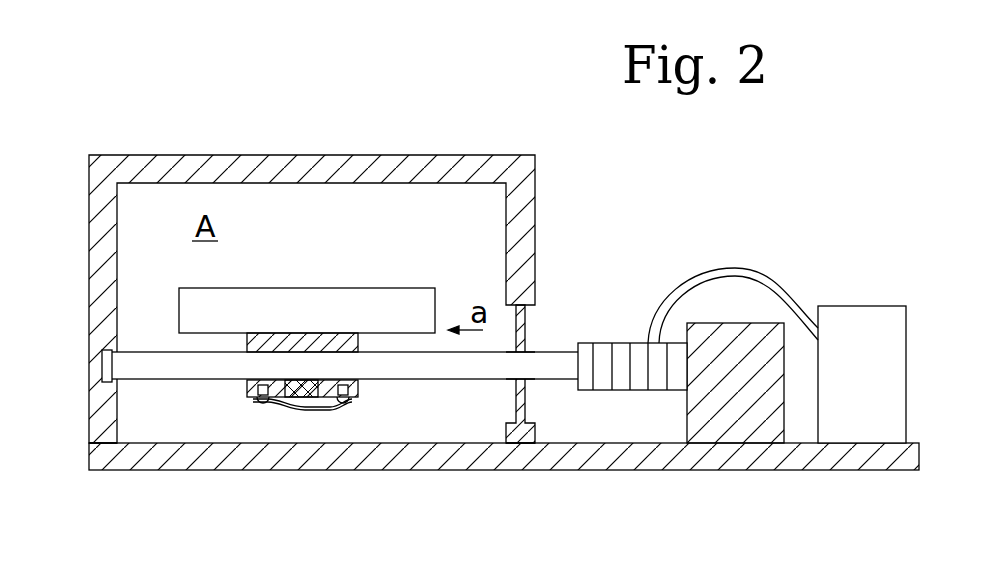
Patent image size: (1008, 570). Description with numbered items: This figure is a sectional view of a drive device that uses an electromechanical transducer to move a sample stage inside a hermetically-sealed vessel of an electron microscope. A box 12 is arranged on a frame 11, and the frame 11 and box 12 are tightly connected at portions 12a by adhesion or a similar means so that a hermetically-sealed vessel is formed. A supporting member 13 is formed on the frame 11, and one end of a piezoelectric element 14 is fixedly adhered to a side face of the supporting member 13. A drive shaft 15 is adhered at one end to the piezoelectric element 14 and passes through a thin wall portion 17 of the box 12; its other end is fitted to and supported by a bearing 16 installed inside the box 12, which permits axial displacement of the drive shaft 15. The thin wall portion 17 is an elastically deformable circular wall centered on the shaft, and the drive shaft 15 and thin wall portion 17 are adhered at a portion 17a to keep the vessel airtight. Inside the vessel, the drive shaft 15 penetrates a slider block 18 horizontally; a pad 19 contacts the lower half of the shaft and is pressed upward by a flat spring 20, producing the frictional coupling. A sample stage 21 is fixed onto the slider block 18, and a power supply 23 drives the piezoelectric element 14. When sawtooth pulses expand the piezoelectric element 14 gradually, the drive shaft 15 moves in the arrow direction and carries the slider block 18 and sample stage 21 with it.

The frame 11 is at (299, 465).
The box 12 is at (331, 155).
The portions 12a is at (102, 447).
The supporting member 13 is at (723, 437).
The piezoelectric element 14 is at (590, 343).
The drive shaft 15 is at (401, 372).
The bearing 16 is at (105, 350).
The thin wall portion 17 is at (530, 400).
The portion 17a is at (526, 352).
The slider block 18 is at (247, 387).
The pad 19 is at (288, 400).
The flat spring 20 is at (320, 405).
The sample stage 21 is at (367, 297).
The power supply 23 is at (843, 312).